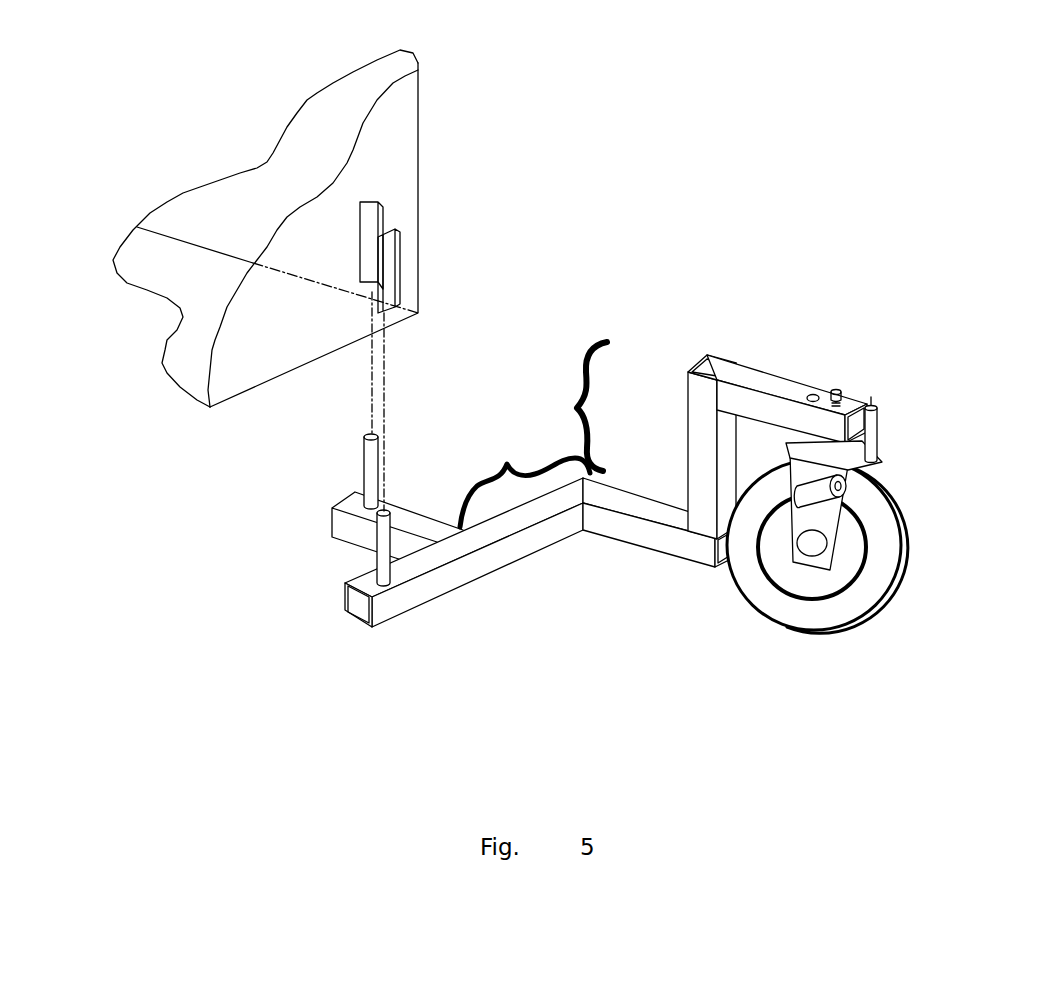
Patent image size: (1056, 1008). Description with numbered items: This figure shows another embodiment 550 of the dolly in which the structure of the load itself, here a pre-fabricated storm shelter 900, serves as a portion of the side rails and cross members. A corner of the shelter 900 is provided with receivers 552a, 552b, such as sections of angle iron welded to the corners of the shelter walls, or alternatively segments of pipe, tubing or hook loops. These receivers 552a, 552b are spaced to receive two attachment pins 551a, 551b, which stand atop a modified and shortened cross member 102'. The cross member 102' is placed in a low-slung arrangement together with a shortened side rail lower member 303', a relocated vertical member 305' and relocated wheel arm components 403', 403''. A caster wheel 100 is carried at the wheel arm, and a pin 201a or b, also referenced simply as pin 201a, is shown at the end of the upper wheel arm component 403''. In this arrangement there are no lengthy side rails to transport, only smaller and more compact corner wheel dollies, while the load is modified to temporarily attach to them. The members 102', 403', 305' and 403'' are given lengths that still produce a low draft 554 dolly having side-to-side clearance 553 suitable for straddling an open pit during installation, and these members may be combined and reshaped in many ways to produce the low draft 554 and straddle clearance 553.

The shelter 900 is at (288, 329).
The receiver 552a is at (440, 204).
The receiver 552b is at (400, 291).
The dolly embodiment 550 is at (858, 165).
The attachment pin 551a is at (368, 458).
The attachment pin 551b is at (378, 557).
The shortened side rail lower member 303' is at (397, 511).
The modified and shortened cross member 102' is at (464, 562).
The relocated wheel arm component 403' is at (660, 537).
The relocated vertical member 305' is at (670, 447).
The relocated wheel arm component 403'' is at (787, 388).
The side-to-side clearance 553 is at (525, 479).
The low draft 554 is at (565, 406).
The locking pin 201a or b is at (949, 417).
The locking pin 201a is at (876, 402).
The caster wheel 100 is at (823, 623).